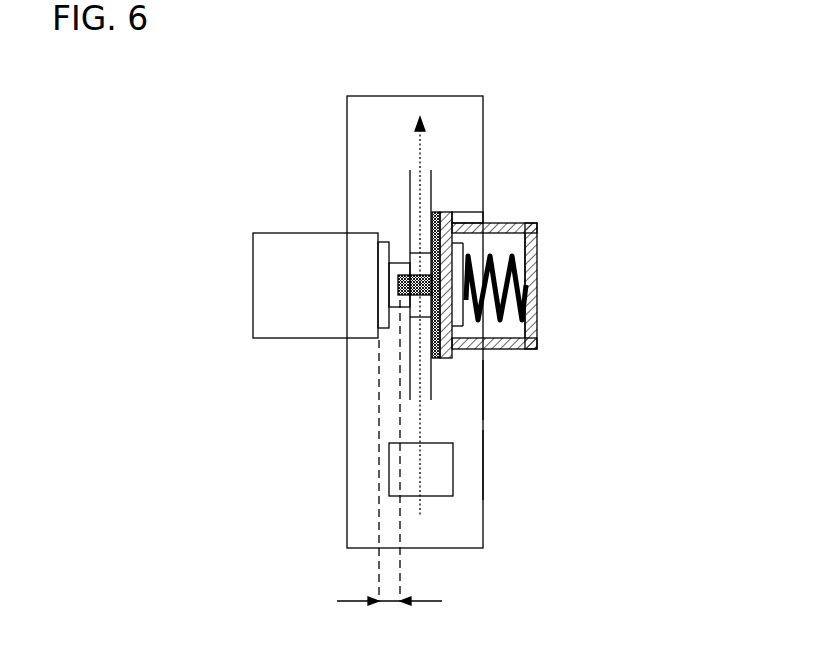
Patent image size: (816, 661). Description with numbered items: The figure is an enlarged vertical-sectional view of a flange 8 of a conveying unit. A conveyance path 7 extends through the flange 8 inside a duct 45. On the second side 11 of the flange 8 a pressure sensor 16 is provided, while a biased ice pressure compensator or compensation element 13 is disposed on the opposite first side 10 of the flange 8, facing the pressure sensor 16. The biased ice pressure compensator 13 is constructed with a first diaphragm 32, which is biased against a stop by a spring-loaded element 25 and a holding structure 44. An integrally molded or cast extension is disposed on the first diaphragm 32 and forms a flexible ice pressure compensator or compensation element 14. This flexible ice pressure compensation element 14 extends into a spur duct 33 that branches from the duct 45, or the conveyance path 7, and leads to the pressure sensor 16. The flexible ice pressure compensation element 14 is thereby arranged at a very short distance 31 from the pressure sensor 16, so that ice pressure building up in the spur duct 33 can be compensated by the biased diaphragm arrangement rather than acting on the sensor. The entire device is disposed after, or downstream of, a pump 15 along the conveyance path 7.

The second side 11 is at (347, 130).
The pressure sensor 16 is at (253, 306).
The duct 45 is at (410, 178).
The conveyance path 7 is at (420, 150).
The first diaphragm 32 is at (436, 212).
The biased ice pressure compensator 13 is at (548, 212).
The holding structure 44 is at (537, 318).
The spring-loaded element 25 is at (508, 282).
The flexible ice pressure compensator 14 is at (408, 275).
The spur duct 33 is at (401, 340).
The pump 15 is at (389, 468).
The first side 10 is at (489, 383).
The flange 8 is at (483, 462).
The distance 31 is at (389, 603).